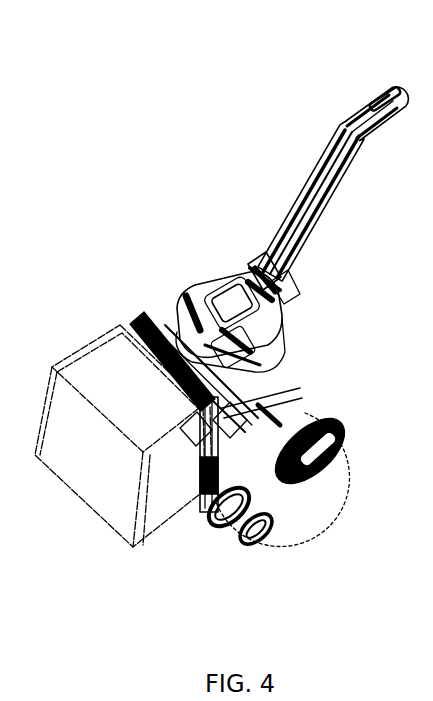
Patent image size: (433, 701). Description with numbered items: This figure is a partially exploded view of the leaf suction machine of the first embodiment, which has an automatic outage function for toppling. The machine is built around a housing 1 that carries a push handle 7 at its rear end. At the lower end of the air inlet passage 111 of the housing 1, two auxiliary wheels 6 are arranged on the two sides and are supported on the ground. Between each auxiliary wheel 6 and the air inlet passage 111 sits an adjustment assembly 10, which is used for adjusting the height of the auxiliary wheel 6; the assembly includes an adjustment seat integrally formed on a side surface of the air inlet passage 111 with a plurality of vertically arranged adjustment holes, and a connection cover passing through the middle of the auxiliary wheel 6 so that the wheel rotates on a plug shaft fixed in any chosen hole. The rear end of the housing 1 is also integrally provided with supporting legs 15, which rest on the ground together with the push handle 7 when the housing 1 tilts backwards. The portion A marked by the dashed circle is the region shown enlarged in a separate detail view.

The push handle 7 is at (366, 104).
The housing 1 is at (197, 283).
The air inlet passage 111 is at (125, 375).
The supporting leg 15 is at (284, 412).
The adjustment assembly 10 is at (212, 492).
The auxiliary wheel 6 is at (230, 537).
The portion A is at (325, 540).